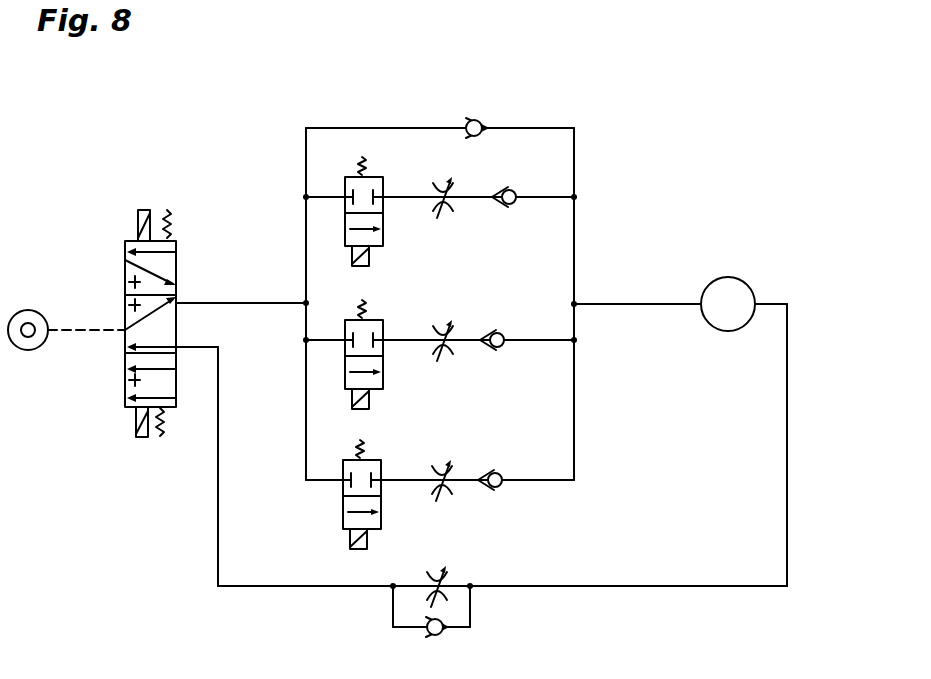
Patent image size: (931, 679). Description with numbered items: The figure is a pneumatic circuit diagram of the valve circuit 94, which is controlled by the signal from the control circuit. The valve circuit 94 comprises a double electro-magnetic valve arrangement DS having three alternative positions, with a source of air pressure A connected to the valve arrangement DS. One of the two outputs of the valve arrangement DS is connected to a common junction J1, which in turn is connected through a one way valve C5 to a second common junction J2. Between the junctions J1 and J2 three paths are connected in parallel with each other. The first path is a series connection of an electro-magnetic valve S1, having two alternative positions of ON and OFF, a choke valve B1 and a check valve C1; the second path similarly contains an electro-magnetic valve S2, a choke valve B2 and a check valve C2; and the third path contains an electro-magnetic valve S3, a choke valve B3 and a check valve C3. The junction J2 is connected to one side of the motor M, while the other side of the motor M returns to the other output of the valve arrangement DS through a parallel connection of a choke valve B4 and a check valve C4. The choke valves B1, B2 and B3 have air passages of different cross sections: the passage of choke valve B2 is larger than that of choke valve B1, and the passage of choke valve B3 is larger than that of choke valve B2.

The source of air pressure A is at (38, 311).
The double electro-magnetic valve arrangement DS is at (176, 270).
The common junction J1 is at (304, 302).
The common junction J2 is at (576, 304).
The motor M is at (744, 304).
The valve circuit 94 is at (595, 167).
The electro-magnetic valve S1 is at (383, 176).
The electro-magnetic valve S2 is at (386, 318).
The electro-magnetic valve S3 is at (384, 462).
The choke valve B1 is at (448, 183).
The choke valve B2 is at (447, 324).
The choke valve B3 is at (447, 463).
The choke valve B4 is at (448, 572).
The check valve C1 is at (512, 187).
The check valve C2 is at (500, 330).
The check valve C3 is at (497, 472).
The check valve C4 is at (440, 633).
The one way valve C5 is at (474, 118).